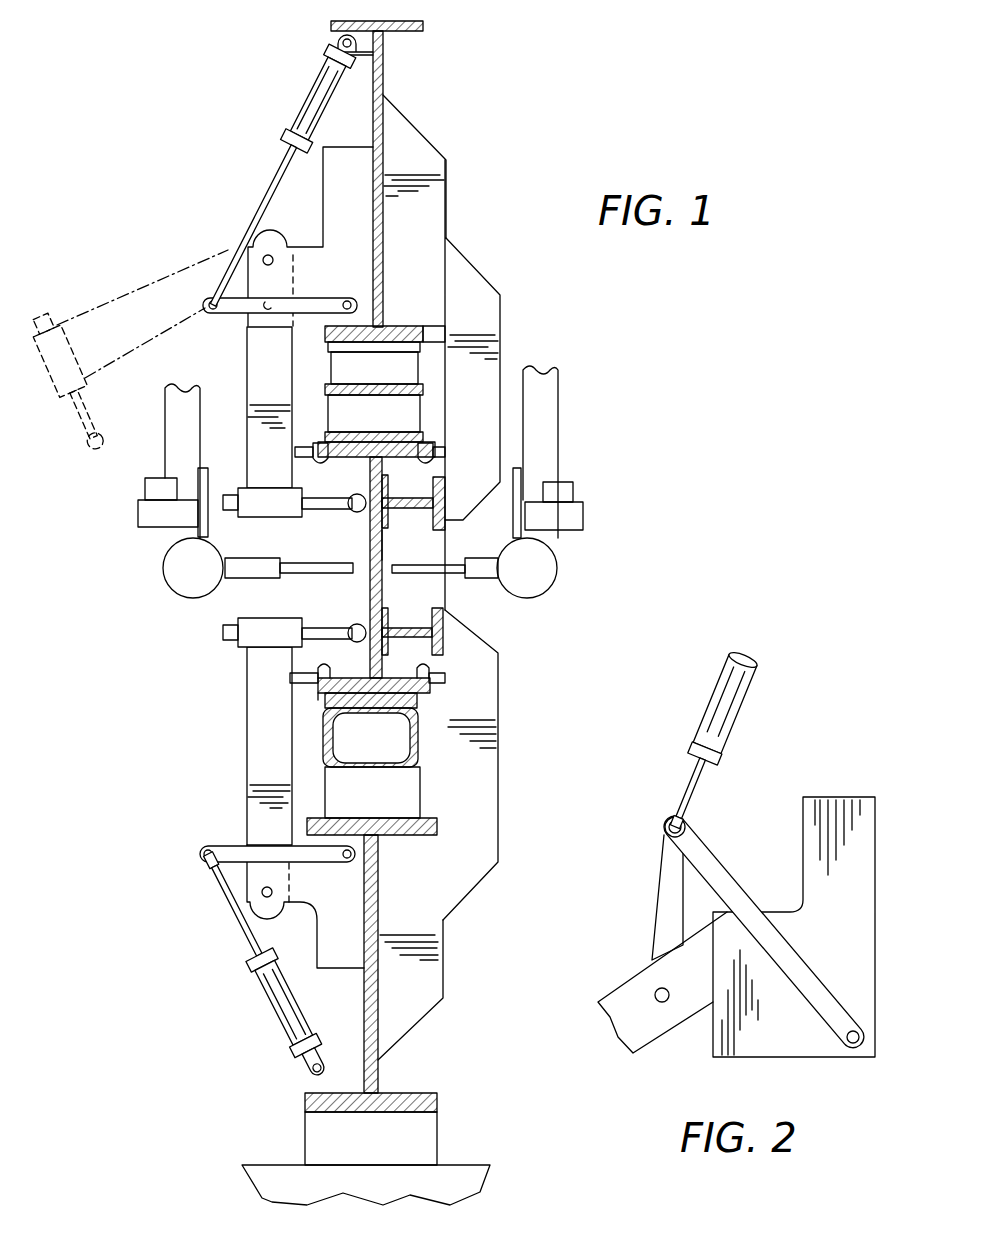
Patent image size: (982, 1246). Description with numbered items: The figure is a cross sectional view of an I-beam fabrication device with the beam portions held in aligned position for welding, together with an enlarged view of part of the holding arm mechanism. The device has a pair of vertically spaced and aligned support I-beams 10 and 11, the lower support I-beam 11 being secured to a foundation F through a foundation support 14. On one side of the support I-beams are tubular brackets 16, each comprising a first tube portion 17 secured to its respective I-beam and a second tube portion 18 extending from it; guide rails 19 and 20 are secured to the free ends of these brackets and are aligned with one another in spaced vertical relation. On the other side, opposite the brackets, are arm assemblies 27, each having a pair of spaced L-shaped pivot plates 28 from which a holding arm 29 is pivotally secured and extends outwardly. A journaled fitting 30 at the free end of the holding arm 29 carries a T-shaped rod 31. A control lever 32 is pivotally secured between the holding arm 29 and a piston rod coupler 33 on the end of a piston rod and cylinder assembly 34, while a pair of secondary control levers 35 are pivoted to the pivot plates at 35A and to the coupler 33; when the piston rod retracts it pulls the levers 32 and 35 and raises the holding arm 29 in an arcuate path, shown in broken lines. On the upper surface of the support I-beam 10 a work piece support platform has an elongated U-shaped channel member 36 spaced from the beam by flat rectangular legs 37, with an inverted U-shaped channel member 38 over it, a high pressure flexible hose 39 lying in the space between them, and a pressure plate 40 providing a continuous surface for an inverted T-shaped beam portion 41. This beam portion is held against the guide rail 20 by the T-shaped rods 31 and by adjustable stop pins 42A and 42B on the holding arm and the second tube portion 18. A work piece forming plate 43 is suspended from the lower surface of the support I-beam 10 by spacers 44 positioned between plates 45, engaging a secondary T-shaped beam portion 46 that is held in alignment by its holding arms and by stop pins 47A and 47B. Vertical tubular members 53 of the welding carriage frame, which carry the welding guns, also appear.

In FIG. 1, the support I-beam 10 is at (384, 70).
In FIG. 1, the support I-beam 11 is at (400, 1000).
In FIG. 1, the foundation support 14 is at (415, 1130).
In FIG. 1, the tubular bracket 16 is at (475, 149).
In FIG. 1, the first tube portion 17 is at (415, 130).
In FIG. 1, the second tube portion 18 is at (462, 272).
In FIG. 1, the guide rail 19 is at (398, 508).
In FIG. 1, the guide rail 20 is at (405, 622).
In FIG. 1, the arm assembly 27 is at (249, 176).
In FIG. 1, the L-shaped pivot plate 28 is at (348, 273).
In FIG. 2, the L-shaped pivot plate 28 is at (850, 911).
In FIG. 1, the holding arm 29 is at (258, 345).
In FIG. 2, the holding arm 29 is at (628, 998).
In FIG. 1, the journaled fitting 30 is at (258, 505).
In FIG. 1, the T-shaped rod 31 is at (318, 510).
In FIG. 2, the control lever 32 is at (670, 885).
In FIG. 2, the piston rod coupler 33 is at (688, 813).
In FIG. 1, the piston rod and cylinder assembly 34 is at (318, 85).
In FIG. 2, the piston rod and cylinder assembly 34 is at (760, 682).
In FIG. 1, the secondary control lever 35 is at (222, 848).
In FIG. 2, the secondary control lever 35 is at (715, 862).
In FIG. 2, the pivot 35A is at (848, 1047).
In FIG. 1, the elongated U-shaped channel member 36 is at (415, 760).
In FIG. 1, the flat rectangular leg 37 is at (409, 798).
In FIG. 1, the inverted U-shaped channel member 38 is at (430, 708).
In FIG. 1, the high pressure flexible hose 39 is at (166, 574).
In FIG. 1, the pressure plate 40 is at (323, 697).
In FIG. 1, the inverted T-shaped beam portion 41 is at (370, 595).
In FIG. 1, the stop pin 42A is at (318, 668).
In FIG. 1, the stop pin 42B is at (432, 660).
In FIG. 1, the work piece forming plate 43 is at (428, 440).
In FIG. 1, the spacer 44 is at (384, 375).
In FIG. 1, the plate 45 is at (327, 392).
In FIG. 1, the secondary T-shaped beam portion 46 is at (405, 555).
In FIG. 1, the stop pin 47A is at (314, 458).
In FIG. 1, the stop pin 47B is at (440, 450).
In FIG. 1, the vertical tubular member 53 is at (176, 410).
In FIG. 1, the foundation F is at (465, 1172).